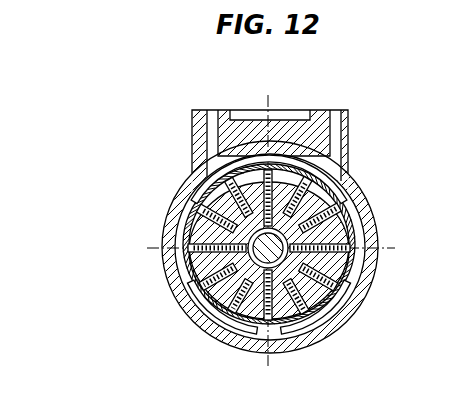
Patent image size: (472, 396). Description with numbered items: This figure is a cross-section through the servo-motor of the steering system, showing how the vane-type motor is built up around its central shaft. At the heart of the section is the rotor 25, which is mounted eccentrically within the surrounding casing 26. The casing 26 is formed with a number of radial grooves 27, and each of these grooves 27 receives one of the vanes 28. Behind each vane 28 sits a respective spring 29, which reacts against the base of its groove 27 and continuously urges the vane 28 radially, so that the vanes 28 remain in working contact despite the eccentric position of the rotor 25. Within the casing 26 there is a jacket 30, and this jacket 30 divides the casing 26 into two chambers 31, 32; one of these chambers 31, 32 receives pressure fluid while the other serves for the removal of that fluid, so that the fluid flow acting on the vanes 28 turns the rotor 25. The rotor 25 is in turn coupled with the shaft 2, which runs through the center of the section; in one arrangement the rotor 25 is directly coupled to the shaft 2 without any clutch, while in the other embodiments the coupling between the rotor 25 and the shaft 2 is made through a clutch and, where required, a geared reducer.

The shaft 2 is at (185, 212).
The rotor 25 is at (338, 190).
The casing 26 is at (362, 210).
The radial grooves 27 is at (350, 243).
The vanes 28 is at (342, 178).
The springs 29 is at (197, 170).
The jacket 30 is at (343, 280).
The chamber 31 is at (320, 315).
The chamber 32 is at (173, 289).